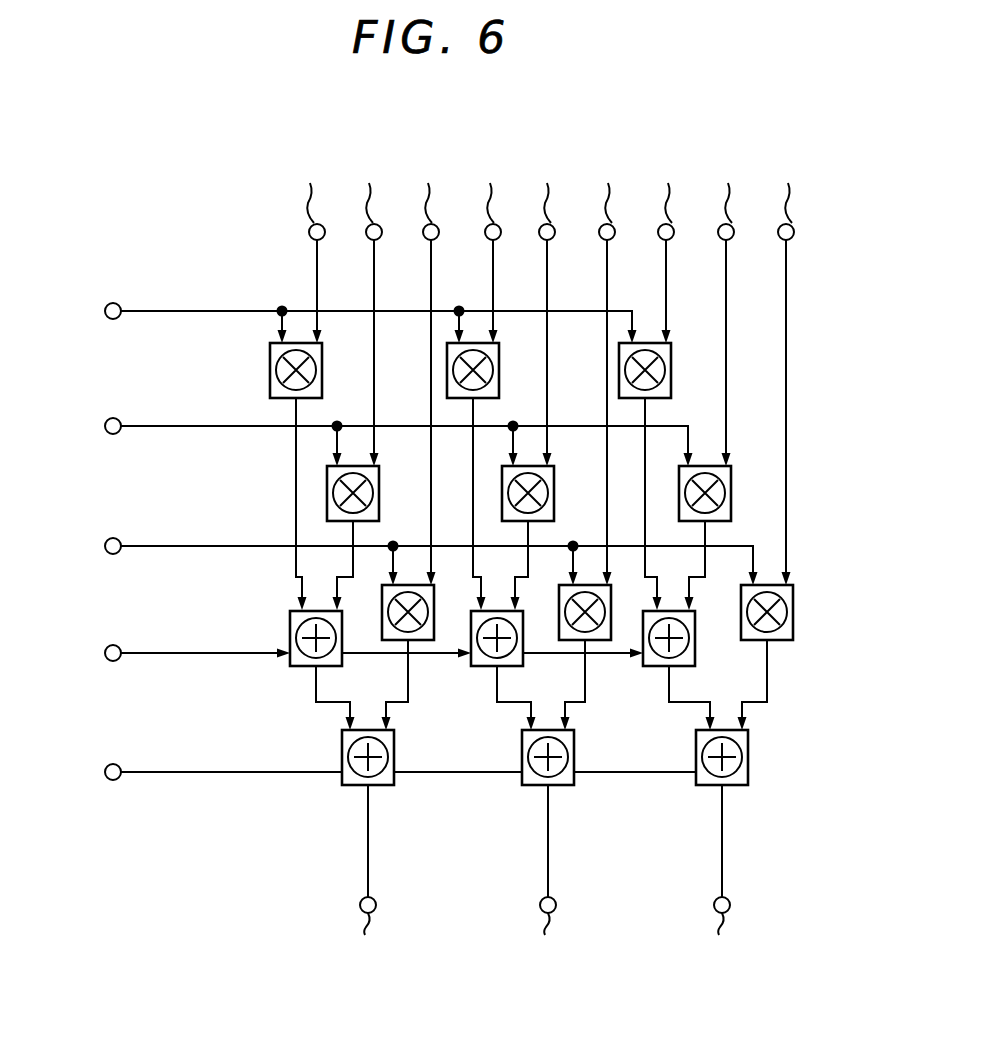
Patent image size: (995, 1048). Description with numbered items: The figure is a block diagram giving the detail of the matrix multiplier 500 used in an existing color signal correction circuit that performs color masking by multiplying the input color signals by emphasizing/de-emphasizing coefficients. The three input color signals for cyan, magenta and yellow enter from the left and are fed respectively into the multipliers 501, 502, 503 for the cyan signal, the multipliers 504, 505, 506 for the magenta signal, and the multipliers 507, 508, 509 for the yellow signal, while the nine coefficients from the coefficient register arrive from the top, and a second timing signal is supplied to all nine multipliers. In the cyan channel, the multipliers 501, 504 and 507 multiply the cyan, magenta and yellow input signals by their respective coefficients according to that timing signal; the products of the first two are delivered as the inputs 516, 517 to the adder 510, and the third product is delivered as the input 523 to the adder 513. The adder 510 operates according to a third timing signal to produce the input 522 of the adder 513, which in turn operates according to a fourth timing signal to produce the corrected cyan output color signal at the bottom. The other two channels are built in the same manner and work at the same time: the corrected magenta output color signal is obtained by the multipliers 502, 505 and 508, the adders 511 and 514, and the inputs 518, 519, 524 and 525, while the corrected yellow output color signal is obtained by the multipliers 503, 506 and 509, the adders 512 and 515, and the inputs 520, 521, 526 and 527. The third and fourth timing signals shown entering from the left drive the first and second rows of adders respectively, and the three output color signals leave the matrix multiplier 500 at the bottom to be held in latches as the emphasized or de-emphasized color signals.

The matrix multiplier 500 is at (856, 392).
The multiplier 501 is at (269, 378).
The multiplier 502 is at (447, 378).
The multiplier 503 is at (619, 378).
The multiplier 504 is at (380, 480).
The multiplier 505 is at (553, 480).
The multiplier 506 is at (755, 452).
The multiplier 507 is at (382, 597).
The multiplier 508 is at (590, 585).
The multiplier 509 is at (793, 616).
The adder 510 is at (295, 668).
The adder 511 is at (478, 668).
The adder 512 is at (658, 668).
The adder 513 is at (347, 787).
The adder 514 is at (530, 787).
The adder 515 is at (702, 787).
The input 516 is at (294, 503).
The input 517 is at (354, 537).
The input 518 is at (493, 505).
The input 519 is at (528, 540).
The input 520 is at (665, 425).
The input 521 is at (704, 538).
The input 522 is at (326, 704).
The input 523 is at (407, 673).
The input 524 is at (500, 704).
The input 525 is at (584, 673).
The input 526 is at (678, 703).
The input 527 is at (768, 680).